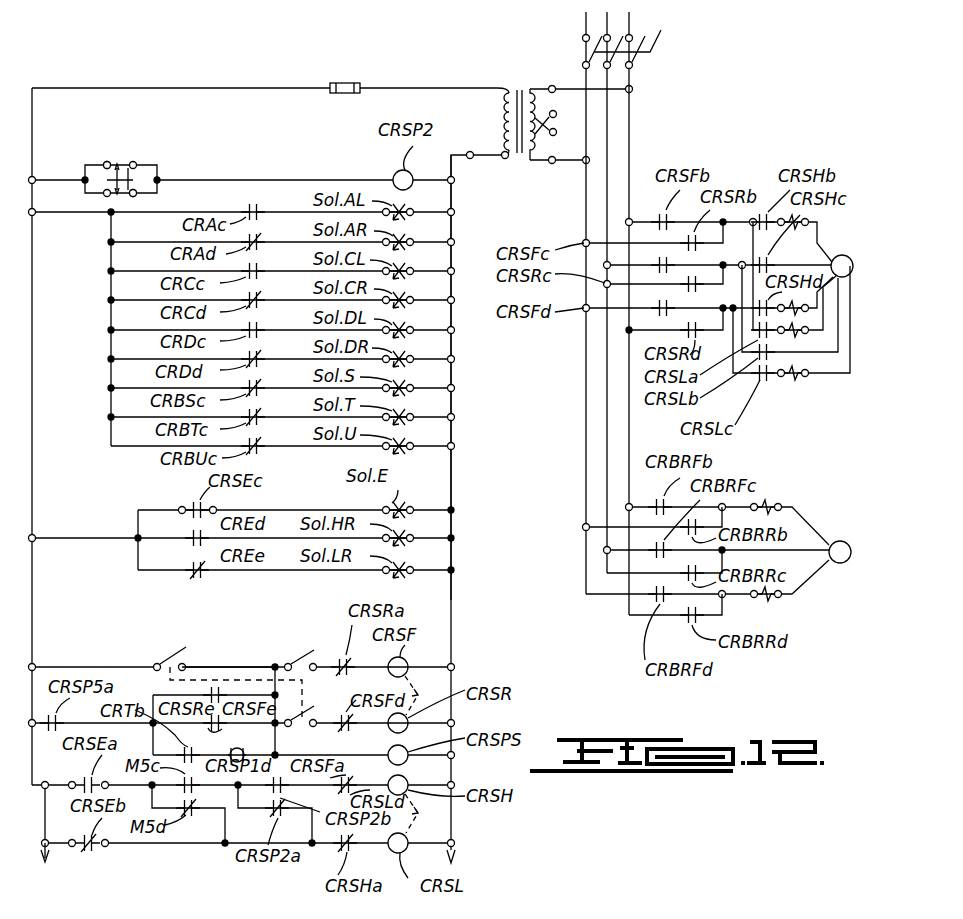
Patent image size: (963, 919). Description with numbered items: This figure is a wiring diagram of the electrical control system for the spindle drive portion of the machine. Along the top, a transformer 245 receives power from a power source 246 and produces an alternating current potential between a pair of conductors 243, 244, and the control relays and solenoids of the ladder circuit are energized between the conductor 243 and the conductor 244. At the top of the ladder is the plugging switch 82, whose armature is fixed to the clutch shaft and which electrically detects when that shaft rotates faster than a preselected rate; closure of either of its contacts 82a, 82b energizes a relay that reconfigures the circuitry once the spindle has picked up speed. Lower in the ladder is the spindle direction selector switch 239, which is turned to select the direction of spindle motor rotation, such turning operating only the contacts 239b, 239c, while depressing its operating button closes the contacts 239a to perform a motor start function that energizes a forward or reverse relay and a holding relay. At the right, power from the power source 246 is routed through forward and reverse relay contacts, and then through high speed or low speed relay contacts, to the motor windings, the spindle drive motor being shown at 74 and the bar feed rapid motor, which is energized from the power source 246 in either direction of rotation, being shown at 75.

The conductor 243 is at (100, 88).
The conductor 244 is at (453, 190).
The transformer 245 is at (497, 100).
The power source 246 is at (634, 66).
The plugging switch 82 is at (135, 163).
The plugging switch contact 82a is at (108, 162).
The plugging switch contact 82b is at (136, 196).
The spindle direction selector switch 239 is at (170, 636).
The switch contacts 239a is at (186, 658).
The switch contacts 239b is at (314, 660).
The switch contacts 239c is at (300, 715).
The clutch member 74 is at (838, 256).
The clutch member 75 is at (838, 540).